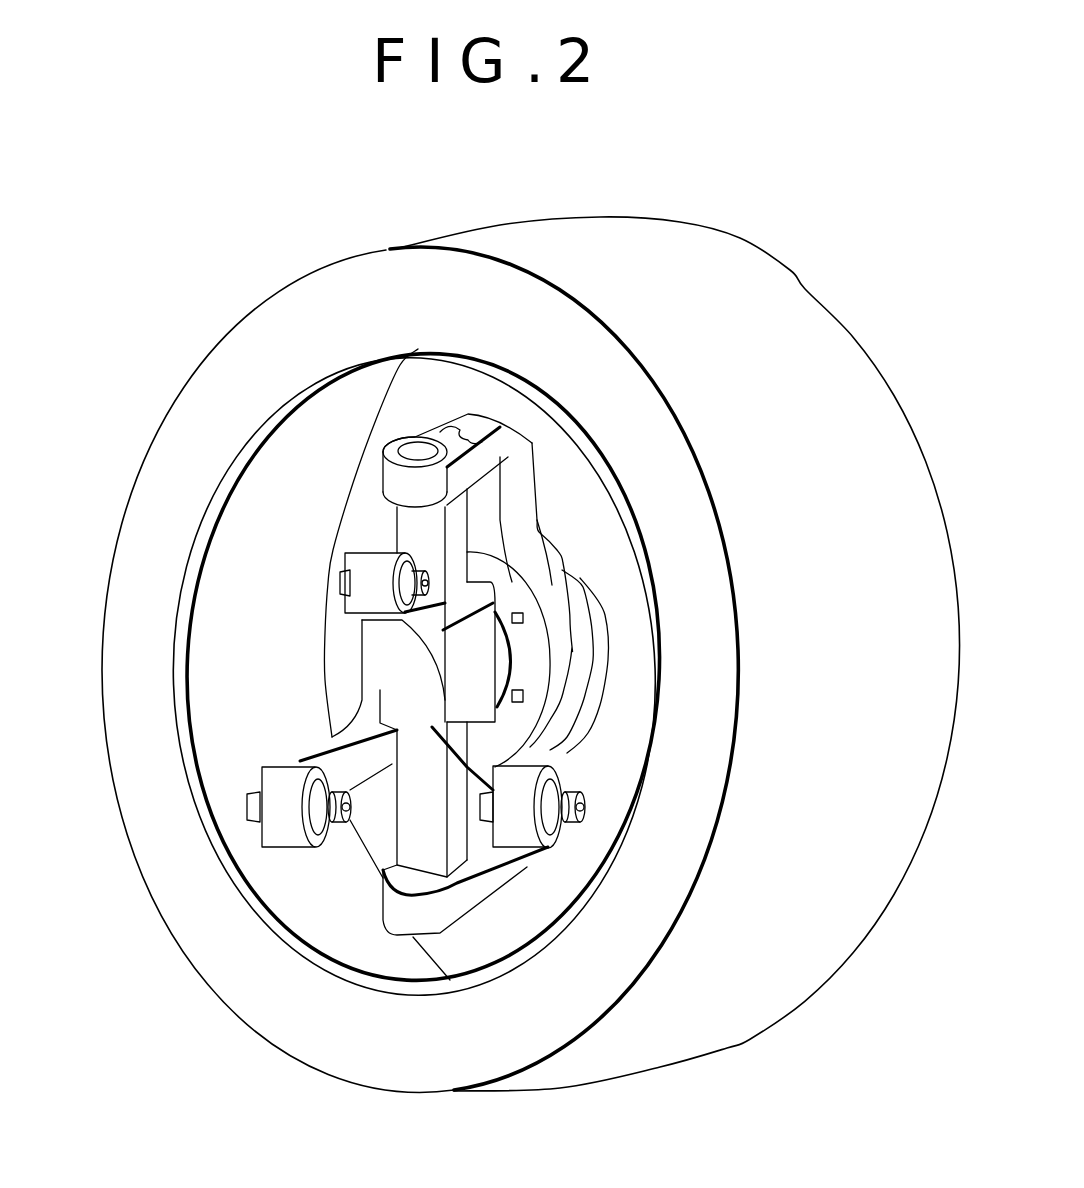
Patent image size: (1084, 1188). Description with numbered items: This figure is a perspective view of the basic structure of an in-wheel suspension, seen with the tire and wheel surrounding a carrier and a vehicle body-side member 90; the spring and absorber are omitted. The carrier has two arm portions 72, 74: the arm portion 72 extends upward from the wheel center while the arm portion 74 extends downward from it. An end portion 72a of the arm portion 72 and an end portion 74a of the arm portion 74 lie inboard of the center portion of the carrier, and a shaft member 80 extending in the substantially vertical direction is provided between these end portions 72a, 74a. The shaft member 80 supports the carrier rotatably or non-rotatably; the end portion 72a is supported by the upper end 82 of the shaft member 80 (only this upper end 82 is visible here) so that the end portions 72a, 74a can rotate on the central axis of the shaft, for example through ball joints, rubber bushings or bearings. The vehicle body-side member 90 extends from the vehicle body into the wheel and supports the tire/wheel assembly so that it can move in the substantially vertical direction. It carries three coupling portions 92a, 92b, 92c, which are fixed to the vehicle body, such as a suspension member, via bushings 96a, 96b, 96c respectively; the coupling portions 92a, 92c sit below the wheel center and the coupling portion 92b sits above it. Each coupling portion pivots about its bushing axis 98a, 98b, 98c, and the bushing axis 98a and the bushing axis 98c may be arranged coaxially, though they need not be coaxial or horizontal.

The arm portion 72 is at (513, 448).
The end portion 72a is at (437, 487).
The arm portion 74 is at (478, 895).
The end portion 74a is at (417, 913).
The shaft member 80 is at (408, 523).
The upper end 82 is at (420, 450).
The vehicle body-side member 90 is at (477, 648).
The coupling portion 92a is at (528, 837).
The coupling portion 92b is at (371, 574).
The coupling portion 92c is at (275, 772).
The bushing 96a is at (573, 826).
The bushing 96b is at (350, 614).
The bushing 96c is at (295, 862).
The bushing axis 98a is at (468, 807).
The bushing axis 98b is at (310, 585).
The bushing axis 98c is at (365, 807).